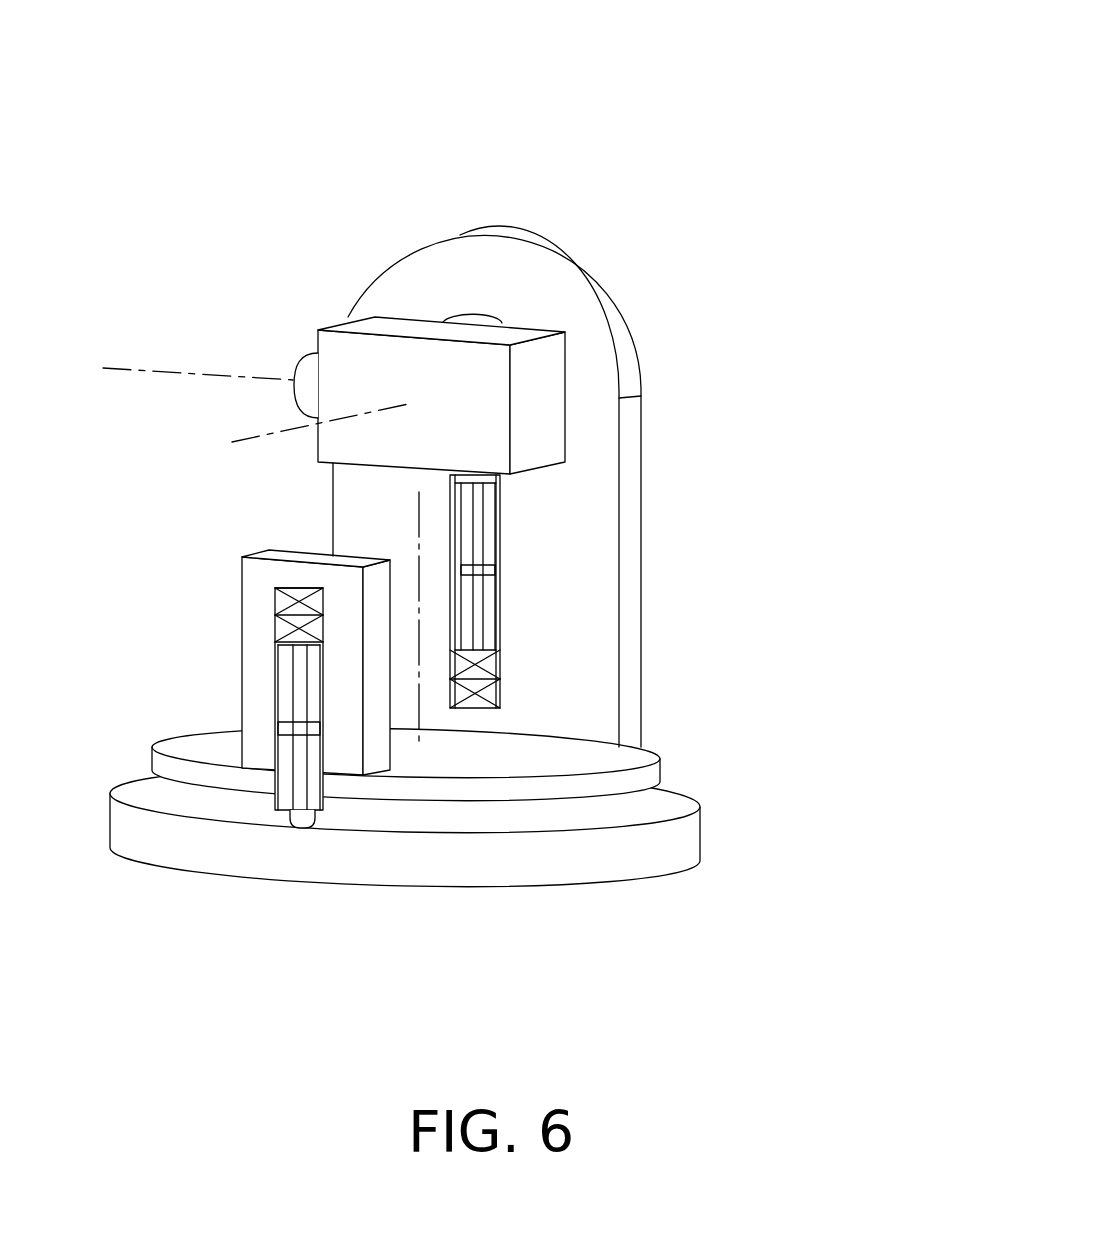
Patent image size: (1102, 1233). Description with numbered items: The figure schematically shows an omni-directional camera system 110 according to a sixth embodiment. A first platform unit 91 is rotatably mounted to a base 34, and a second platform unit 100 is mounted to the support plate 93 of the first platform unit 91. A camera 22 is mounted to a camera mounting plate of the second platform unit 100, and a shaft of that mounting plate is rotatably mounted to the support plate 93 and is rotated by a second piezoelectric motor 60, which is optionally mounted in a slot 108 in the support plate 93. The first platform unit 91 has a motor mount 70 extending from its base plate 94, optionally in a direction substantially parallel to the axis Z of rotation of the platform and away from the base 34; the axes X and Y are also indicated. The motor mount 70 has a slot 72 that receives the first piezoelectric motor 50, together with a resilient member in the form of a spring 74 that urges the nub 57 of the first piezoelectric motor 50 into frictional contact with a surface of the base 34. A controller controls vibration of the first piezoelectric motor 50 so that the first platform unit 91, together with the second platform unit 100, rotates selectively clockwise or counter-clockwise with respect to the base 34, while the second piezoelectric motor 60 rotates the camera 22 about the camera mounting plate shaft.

The omni-directional camera system 110 is at (619, 169).
The camera 22 is at (358, 362).
The second platform unit 100 is at (567, 420).
The second piezoelectric motor 60 is at (490, 540).
The support plate 93 is at (593, 593).
The slot 108 is at (457, 683).
The first platform unit 91 is at (547, 753).
The base plate 94 is at (647, 772).
The base 34 is at (615, 862).
The motor mount 70 is at (252, 582).
The spring 74 is at (302, 588).
The slot 72 is at (276, 624).
The first piezoelectric motor 50 is at (287, 711).
The nub 57 is at (293, 817).
The axis X is at (130, 368).
The axis Y is at (253, 433).
The axis Z of rotation Z is at (418, 547).